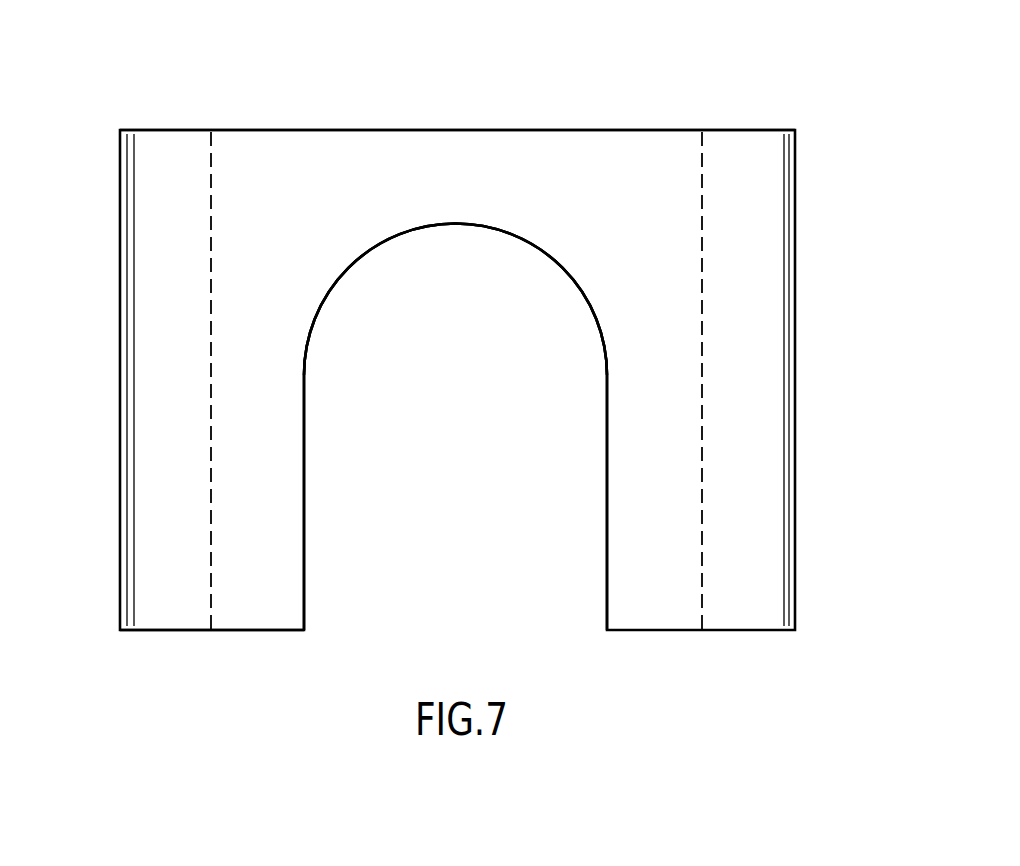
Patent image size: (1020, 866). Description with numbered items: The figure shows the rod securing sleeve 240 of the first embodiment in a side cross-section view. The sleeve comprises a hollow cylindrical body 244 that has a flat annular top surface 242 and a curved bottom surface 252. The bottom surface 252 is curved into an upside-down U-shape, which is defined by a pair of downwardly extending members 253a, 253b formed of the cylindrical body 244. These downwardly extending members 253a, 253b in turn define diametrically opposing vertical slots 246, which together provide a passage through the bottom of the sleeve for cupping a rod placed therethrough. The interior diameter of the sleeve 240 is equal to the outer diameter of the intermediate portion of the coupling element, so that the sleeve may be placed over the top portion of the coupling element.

The rod securing sleeve 240 is at (806, 160).
The flat annular top surface 242 is at (167, 129).
The hollow cylindrical body 244 is at (683, 285).
The vertical slots 246 is at (488, 451).
The curved bottom surface 252 is at (437, 226).
The downwardly extending member 253a is at (770, 592).
The downwardly extending member 253b is at (152, 610).